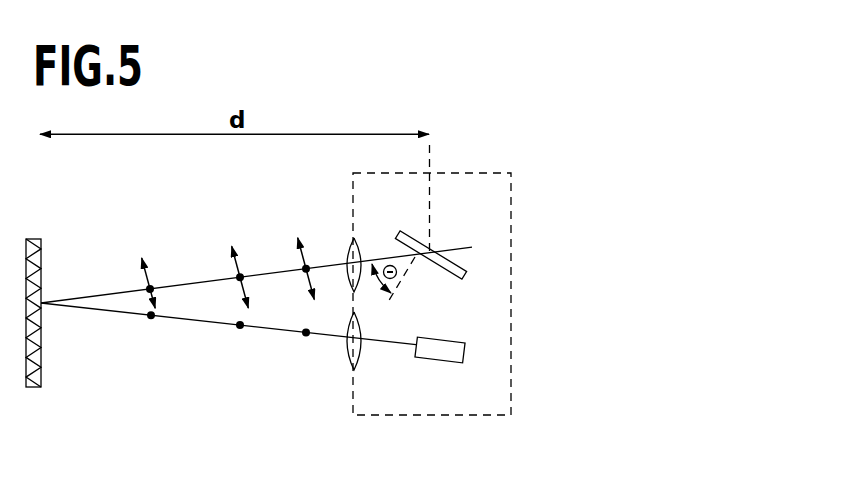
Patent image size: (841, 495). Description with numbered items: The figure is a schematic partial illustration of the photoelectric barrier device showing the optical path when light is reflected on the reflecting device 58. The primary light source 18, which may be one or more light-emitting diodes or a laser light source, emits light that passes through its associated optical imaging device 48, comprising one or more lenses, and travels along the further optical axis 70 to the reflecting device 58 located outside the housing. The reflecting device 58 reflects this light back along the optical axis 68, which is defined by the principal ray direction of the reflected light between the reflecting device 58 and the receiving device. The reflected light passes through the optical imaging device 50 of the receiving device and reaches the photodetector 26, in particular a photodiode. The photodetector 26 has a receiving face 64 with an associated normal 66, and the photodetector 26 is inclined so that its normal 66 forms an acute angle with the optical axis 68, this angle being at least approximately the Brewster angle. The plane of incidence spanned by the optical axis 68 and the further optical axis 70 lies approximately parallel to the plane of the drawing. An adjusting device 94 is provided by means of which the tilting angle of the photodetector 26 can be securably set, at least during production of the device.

The primary light source 18 is at (432, 348).
The photodetector 26 is at (455, 263).
The optical imaging device 48 is at (348, 357).
The optical imaging device 50 is at (349, 250).
The reflecting device 58 is at (41, 382).
The receiving face 64 is at (452, 278).
The normal 66 is at (401, 273).
The optical axis 68 is at (182, 285).
The further optical axis 70 is at (200, 321).
The adjusting device 94 is at (462, 247).